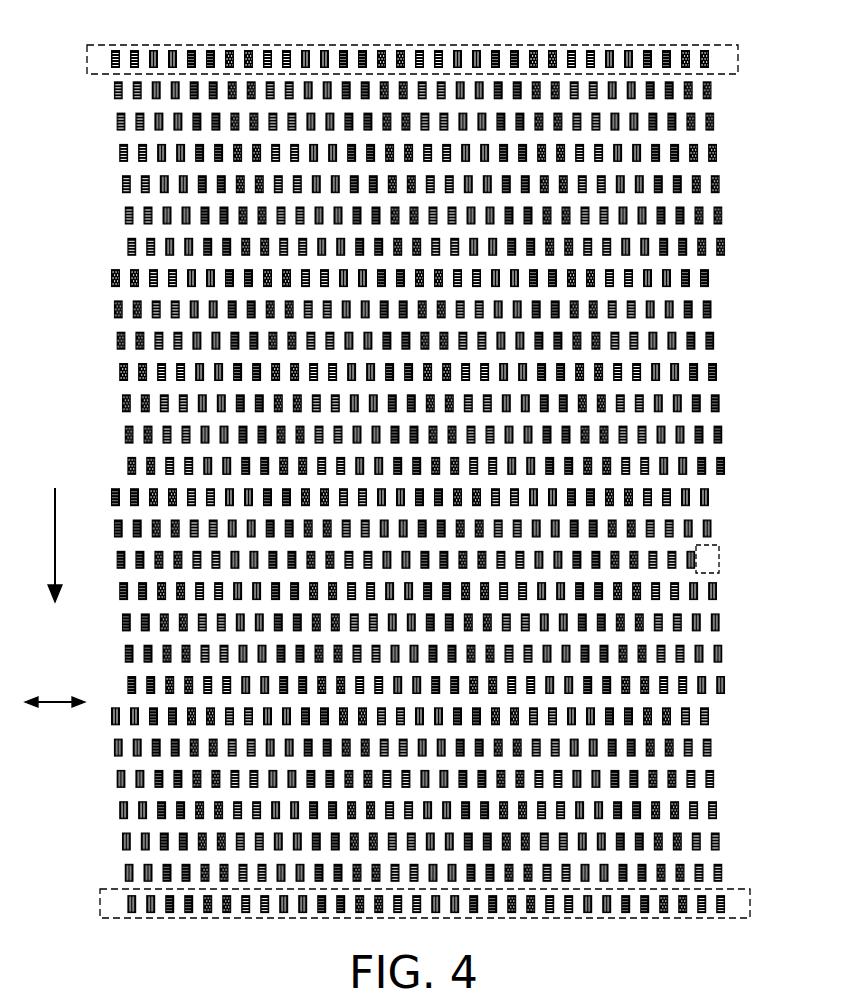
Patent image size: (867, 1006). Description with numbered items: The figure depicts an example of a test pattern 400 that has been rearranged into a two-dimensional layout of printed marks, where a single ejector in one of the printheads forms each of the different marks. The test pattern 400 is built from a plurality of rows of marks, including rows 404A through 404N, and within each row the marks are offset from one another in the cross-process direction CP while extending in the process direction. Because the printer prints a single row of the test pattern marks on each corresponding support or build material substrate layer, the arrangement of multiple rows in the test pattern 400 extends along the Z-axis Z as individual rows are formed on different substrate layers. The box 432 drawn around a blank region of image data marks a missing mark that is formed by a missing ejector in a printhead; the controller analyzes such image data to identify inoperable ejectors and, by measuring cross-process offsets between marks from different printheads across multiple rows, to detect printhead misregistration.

The test pattern 400 is at (393, 466).
The row of marks 404A is at (87, 60).
The row of marks 404N is at (100, 906).
The box 432 is at (722, 558).
The Z-axis Z is at (54, 548).
The cross-process direction CP is at (55, 705).